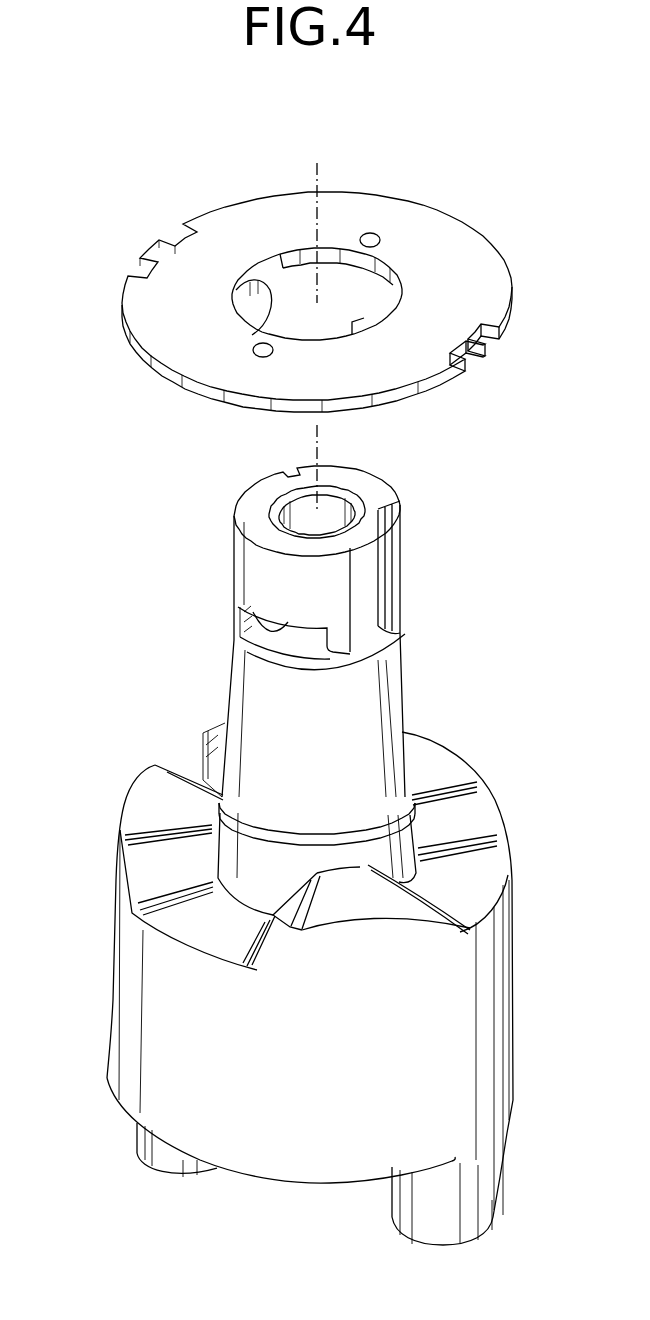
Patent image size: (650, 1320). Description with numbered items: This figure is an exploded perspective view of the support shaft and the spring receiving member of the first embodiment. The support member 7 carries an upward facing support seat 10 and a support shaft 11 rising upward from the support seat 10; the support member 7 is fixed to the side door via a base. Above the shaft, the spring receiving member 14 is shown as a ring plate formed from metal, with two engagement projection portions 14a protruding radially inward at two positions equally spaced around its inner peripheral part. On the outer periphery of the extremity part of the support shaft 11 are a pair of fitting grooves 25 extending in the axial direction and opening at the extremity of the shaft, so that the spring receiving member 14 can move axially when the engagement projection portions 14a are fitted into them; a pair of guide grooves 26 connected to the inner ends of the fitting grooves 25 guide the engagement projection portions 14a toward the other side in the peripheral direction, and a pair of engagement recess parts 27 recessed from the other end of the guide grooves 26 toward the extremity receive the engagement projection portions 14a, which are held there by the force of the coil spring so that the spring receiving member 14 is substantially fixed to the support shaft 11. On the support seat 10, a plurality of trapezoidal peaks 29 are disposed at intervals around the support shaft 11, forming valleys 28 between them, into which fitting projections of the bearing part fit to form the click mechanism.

The support member 7 is at (104, 1051).
The support seat 10 is at (488, 885).
The support shaft 11 is at (383, 675).
The spring receiving member 14 is at (408, 223).
The engagement projection portions 14a is at (375, 335).
The fitting grooves 25 is at (283, 478).
The guide grooves 26 is at (340, 657).
The engagement recess parts 27 is at (240, 638).
The valleys 28 is at (472, 808).
The trapezoidal peaks 29 is at (443, 763).